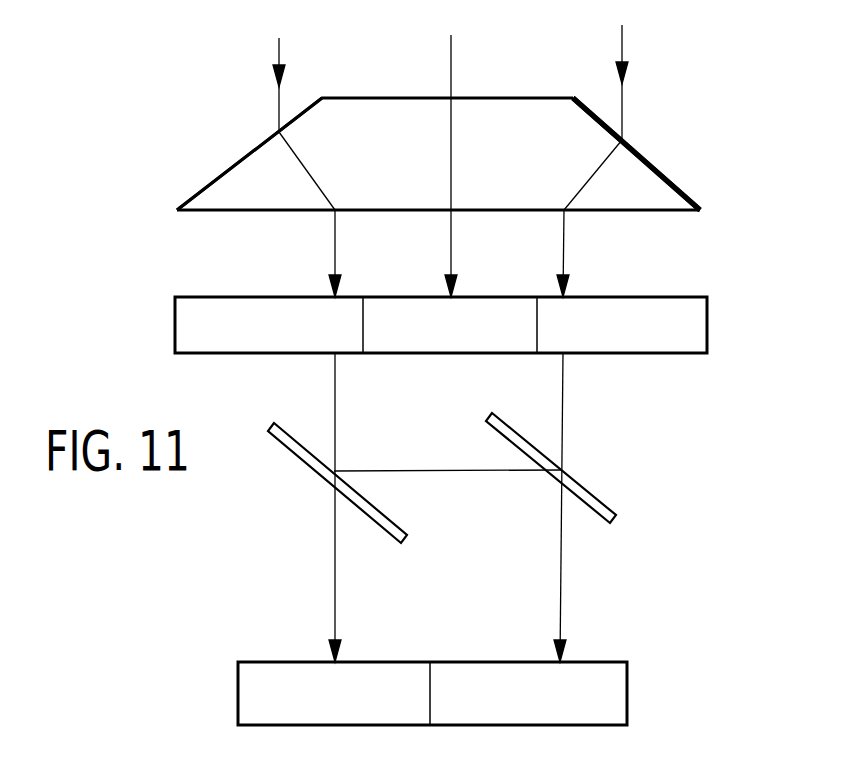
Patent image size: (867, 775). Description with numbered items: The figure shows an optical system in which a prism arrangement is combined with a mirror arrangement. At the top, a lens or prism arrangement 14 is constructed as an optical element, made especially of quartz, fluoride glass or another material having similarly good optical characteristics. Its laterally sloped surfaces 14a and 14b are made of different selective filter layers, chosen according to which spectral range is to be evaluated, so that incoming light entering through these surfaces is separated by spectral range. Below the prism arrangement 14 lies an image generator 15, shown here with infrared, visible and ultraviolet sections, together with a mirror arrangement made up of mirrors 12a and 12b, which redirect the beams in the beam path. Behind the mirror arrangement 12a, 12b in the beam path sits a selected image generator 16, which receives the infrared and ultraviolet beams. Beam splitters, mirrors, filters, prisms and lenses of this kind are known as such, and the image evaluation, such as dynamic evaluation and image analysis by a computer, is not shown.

The prism arrangement 14 is at (510, 98).
The laterally sloped surface 14a is at (228, 170).
The laterally sloped surface 14b is at (650, 160).
The image generator 15 is at (175, 327).
The mirror 12a is at (297, 457).
The mirror 12b is at (590, 492).
The selected image generator 16 is at (238, 697).